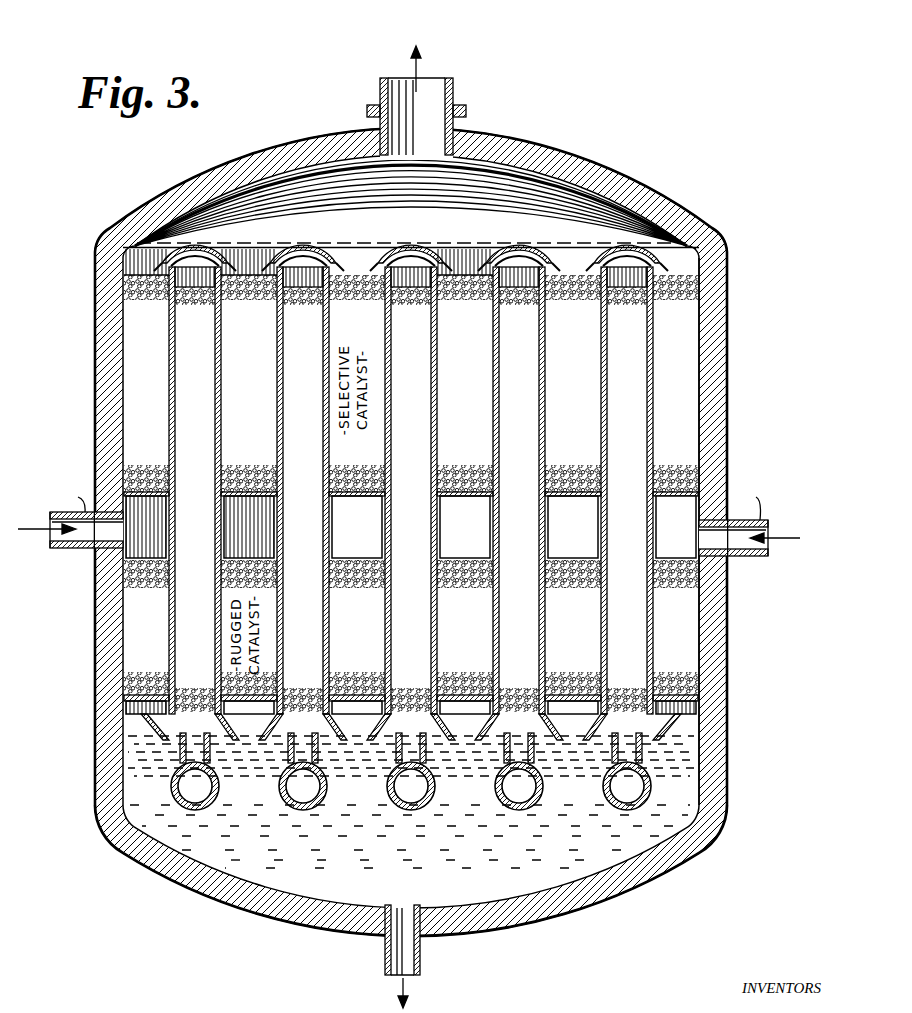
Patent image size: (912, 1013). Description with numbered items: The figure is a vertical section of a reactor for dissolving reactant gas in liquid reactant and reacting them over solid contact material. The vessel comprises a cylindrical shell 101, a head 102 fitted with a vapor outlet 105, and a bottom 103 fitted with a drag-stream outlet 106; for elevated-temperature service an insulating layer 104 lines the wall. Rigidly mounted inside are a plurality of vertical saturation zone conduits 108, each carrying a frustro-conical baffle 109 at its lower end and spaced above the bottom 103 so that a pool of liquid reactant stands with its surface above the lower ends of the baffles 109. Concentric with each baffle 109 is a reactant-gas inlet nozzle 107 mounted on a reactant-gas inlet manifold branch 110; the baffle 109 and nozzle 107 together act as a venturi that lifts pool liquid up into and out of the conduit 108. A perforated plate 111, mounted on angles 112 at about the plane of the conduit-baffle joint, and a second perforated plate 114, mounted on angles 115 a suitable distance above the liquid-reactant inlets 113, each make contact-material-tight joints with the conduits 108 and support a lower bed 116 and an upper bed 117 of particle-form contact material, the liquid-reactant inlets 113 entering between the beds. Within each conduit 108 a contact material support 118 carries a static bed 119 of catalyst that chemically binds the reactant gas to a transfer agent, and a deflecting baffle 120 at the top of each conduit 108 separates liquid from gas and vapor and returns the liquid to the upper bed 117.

The cylindrical shell 101 is at (703, 345).
The head 102 is at (566, 170).
The bottom 103 is at (228, 893).
The insulating layer 104 is at (712, 658).
The vapor outlet 105 is at (458, 124).
The drag-stream outlet 106 is at (385, 956).
The reactant-gas inlet nozzle 107 is at (434, 778).
The saturation zone conduit 108 is at (380, 646).
The frustro-conical baffle 109 is at (229, 718).
The reactant-gas inlet manifold branch 110 is at (388, 796).
The perforated plate 111 is at (483, 703).
The angles 112 is at (685, 706).
The liquid-reactant inlet 113 is at (748, 556).
The perforated plate 114 is at (568, 498).
The angles 115 is at (690, 503).
The lower bed 116 is at (140, 640).
The upper bed 117 is at (572, 283).
The contact material support 118 is at (592, 707).
The static bed 119 is at (492, 533).
The deflecting baffle 120 is at (507, 247).